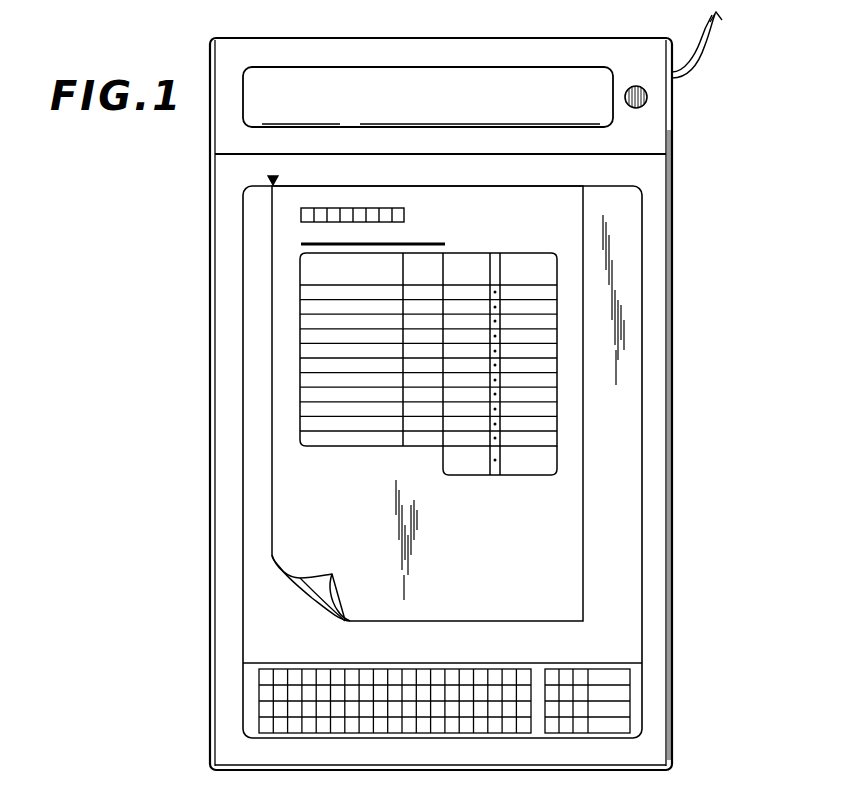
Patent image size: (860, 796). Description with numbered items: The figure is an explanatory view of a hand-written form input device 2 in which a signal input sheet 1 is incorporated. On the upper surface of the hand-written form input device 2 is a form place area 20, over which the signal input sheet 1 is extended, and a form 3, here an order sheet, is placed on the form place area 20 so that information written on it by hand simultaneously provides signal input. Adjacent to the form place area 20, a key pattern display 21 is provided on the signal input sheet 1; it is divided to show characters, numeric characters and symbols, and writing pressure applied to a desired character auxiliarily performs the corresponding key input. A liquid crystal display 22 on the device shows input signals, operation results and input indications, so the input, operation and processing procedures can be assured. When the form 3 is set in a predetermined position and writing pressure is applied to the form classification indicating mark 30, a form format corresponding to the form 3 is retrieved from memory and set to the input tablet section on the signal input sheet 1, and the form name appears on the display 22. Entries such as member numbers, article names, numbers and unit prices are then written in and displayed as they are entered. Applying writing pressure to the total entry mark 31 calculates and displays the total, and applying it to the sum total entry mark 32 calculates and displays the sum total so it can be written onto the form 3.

The signal input sheet 1 is at (627, 262).
The hand-written form input device 2 is at (672, 362).
The form 3 is at (283, 390).
The form place area 20 is at (260, 231).
The key pattern display 21 is at (638, 700).
The liquid crystal display 22 is at (487, 85).
The form classification indicating mark 30 is at (561, 213).
The total entry mark 31 is at (494, 307).
The sum total entry mark 32 is at (496, 460).